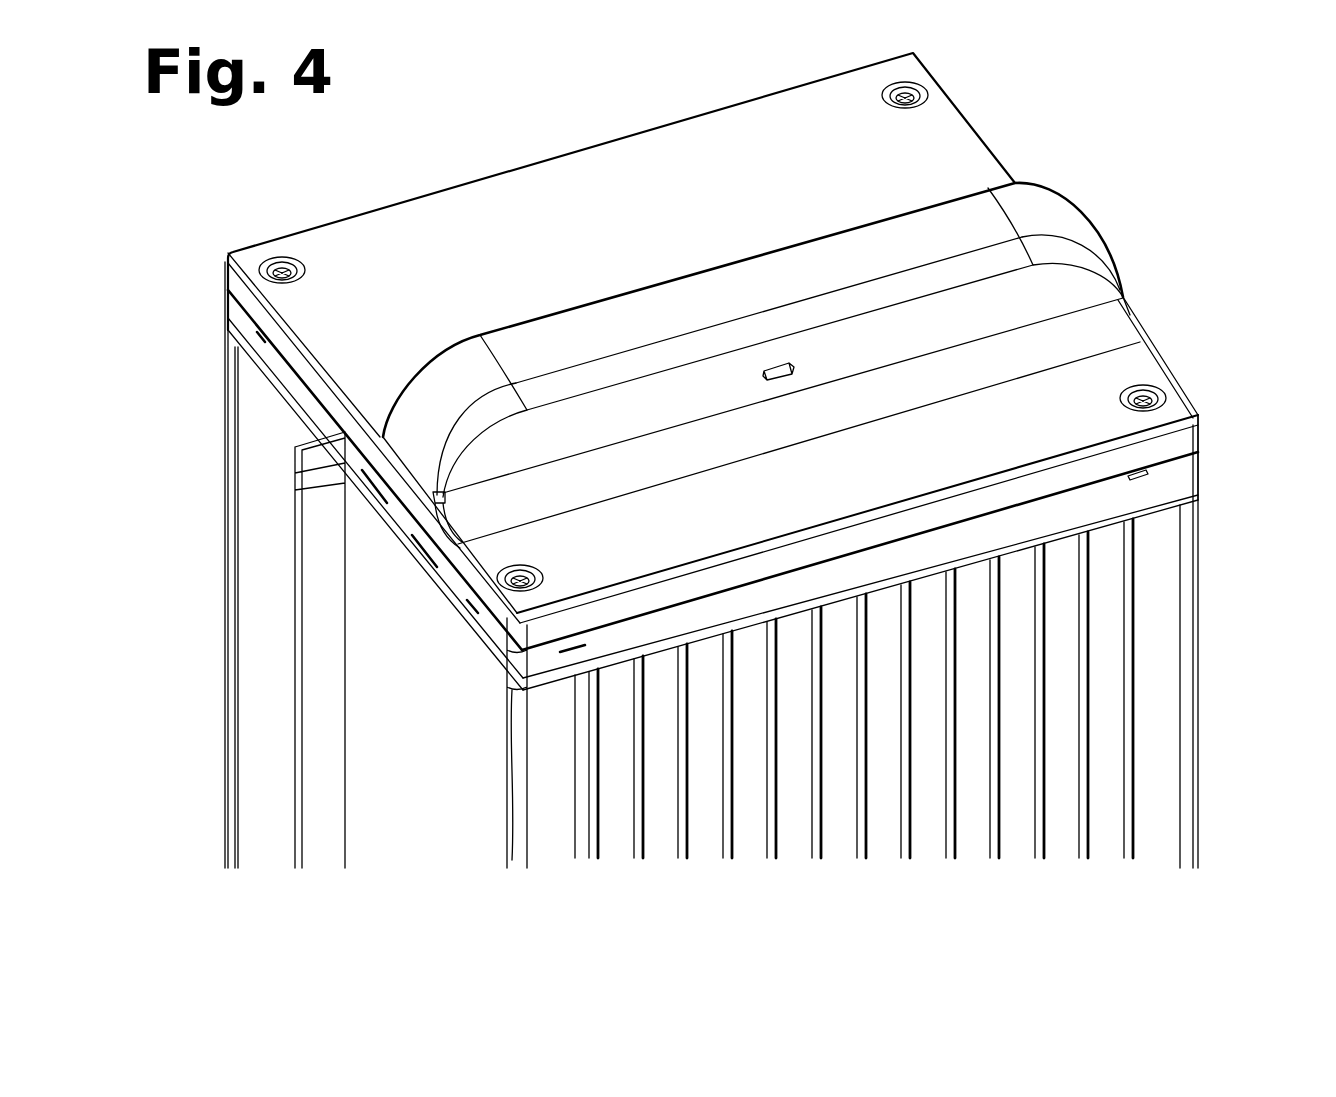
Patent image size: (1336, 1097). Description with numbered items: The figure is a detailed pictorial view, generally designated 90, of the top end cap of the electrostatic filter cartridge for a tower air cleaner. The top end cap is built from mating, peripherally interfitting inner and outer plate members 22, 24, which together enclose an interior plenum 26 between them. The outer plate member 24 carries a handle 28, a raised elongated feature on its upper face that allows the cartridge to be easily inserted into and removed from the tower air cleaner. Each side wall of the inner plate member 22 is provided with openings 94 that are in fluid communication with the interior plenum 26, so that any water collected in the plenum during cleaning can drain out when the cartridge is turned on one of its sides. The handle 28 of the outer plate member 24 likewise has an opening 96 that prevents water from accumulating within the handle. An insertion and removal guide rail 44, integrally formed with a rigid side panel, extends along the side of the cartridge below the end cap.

The inner plate member 22 is at (295, 524).
The outer plate member 24 is at (224, 299).
The interior plenum 26 is at (1032, 174).
The handle 28 is at (590, 332).
The insertion and removal guide rail 44 is at (266, 361).
The detailed front pictorial view of the top end cap 90 is at (205, 603).
The openings 94 is at (1166, 478).
The opening 96 is at (808, 367).